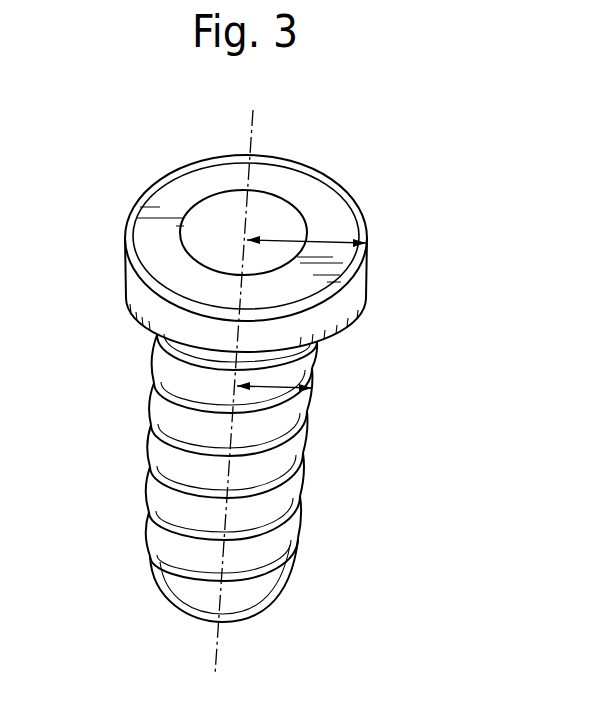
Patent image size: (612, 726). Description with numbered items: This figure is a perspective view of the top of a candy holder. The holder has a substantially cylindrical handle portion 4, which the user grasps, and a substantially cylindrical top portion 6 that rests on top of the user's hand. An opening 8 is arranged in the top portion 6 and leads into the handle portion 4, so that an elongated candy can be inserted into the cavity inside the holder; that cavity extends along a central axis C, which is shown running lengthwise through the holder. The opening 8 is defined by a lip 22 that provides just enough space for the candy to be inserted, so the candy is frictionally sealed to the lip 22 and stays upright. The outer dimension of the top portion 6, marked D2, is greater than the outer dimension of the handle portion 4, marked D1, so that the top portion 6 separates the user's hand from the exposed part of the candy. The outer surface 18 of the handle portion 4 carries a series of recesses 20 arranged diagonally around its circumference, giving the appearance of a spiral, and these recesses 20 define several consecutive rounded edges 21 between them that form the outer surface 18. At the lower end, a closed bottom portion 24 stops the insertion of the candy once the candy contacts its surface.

The handle portion 4 is at (265, 519).
The top portion 6 is at (140, 292).
The opening 8 is at (280, 207).
The outer surface 18 is at (208, 528).
The recesses 20 is at (317, 371).
The rounded edges 21 is at (152, 402).
The lip 22 is at (200, 197).
The closed bottom portion 24 is at (248, 642).
The outer dimension of the handle portion D1 is at (307, 406).
The outer dimension of the top portion D2 is at (322, 238).
The central axis C is at (228, 412).